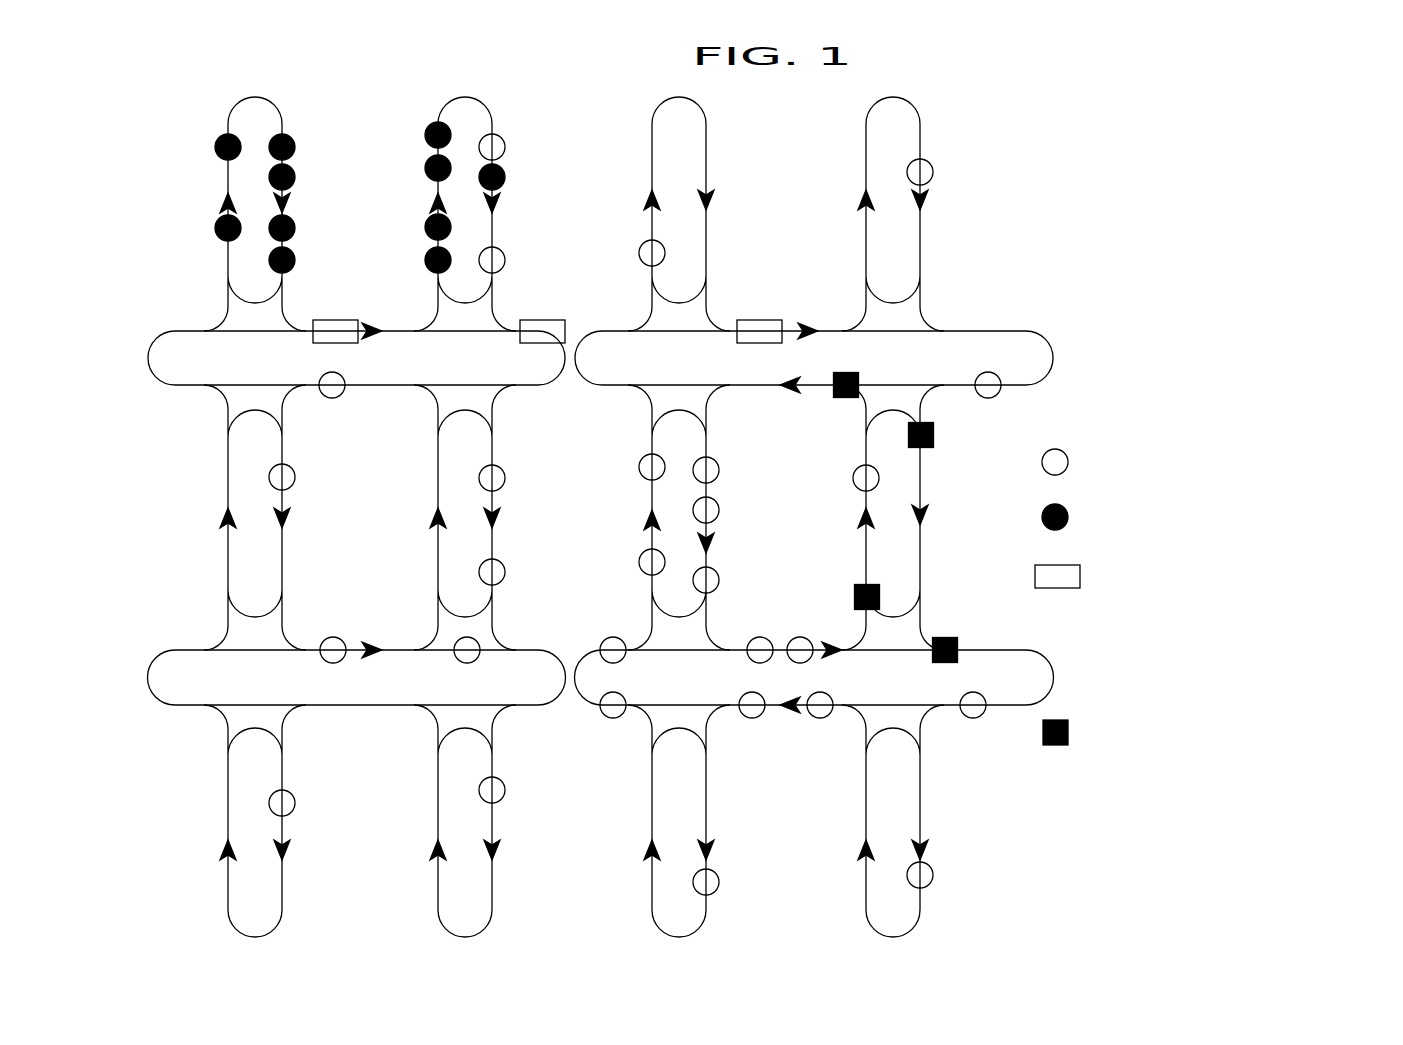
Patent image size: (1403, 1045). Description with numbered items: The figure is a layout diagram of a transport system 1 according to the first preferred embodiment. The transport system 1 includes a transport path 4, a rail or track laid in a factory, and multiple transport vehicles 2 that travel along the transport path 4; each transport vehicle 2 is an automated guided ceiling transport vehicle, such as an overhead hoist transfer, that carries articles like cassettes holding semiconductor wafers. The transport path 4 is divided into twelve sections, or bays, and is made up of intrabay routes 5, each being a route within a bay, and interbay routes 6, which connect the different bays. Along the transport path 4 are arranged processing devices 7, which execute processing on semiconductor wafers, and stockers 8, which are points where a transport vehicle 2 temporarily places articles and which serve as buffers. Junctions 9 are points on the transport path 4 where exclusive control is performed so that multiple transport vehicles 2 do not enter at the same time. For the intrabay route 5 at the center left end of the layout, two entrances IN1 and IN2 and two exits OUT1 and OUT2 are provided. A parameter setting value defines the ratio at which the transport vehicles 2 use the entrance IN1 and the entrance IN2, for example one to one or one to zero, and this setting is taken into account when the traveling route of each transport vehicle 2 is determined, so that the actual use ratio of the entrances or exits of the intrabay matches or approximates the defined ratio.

The transport system 1 is at (753, 517).
The transport vehicle 2 is at (1063, 452).
The transport path 4 is at (633, 517).
The intrabay route 5 is at (282, 120).
The interbay route 6 is at (1053, 352).
The processing device 7 is at (1066, 504).
The stocker 8 is at (1062, 563).
The junction 9 is at (1052, 745).
The exit OUT1 is at (218, 398).
The entrance IN1 is at (290, 395).
The entrance IN2 is at (222, 643).
The exit OUT2 is at (292, 640).